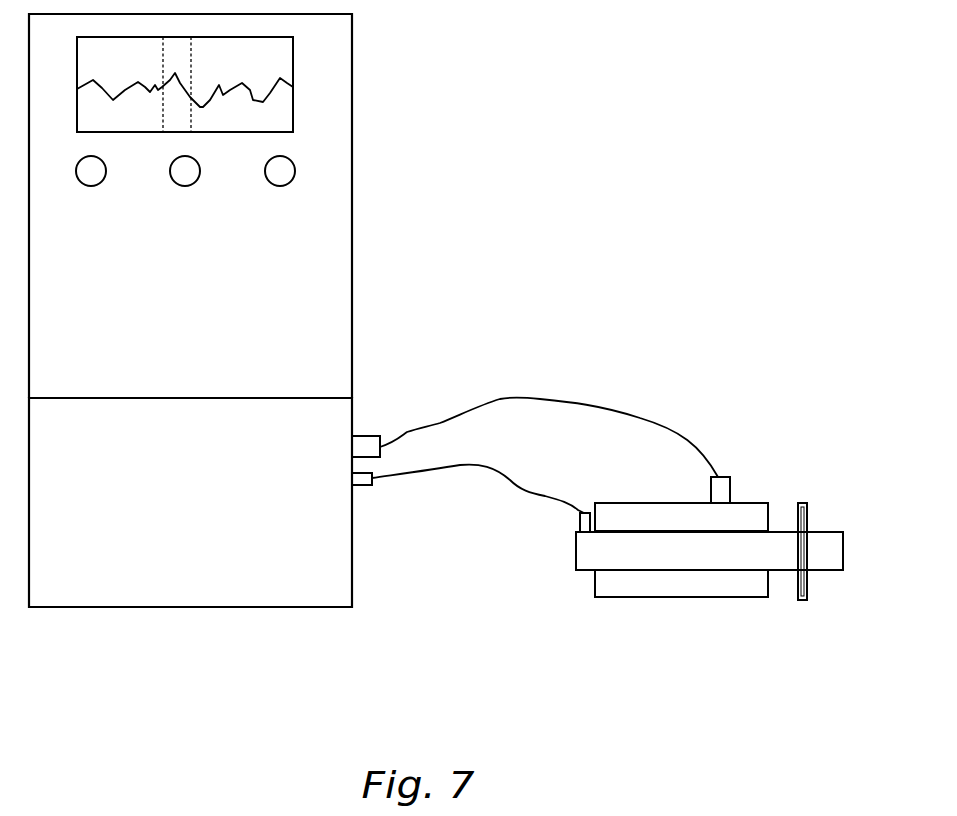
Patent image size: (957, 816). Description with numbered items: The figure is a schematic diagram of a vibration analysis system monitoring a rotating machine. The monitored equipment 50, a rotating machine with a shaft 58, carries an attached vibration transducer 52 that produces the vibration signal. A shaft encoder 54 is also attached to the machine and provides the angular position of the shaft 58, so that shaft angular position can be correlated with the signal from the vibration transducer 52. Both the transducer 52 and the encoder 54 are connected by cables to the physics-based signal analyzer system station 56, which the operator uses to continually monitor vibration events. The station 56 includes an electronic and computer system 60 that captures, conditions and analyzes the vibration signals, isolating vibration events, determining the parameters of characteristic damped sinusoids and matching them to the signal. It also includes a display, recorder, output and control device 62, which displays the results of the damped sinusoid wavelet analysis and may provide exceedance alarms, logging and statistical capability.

The monitored equipment 50 is at (722, 587).
The vibration transducer 52 is at (723, 483).
The shaft encoder 54 is at (578, 520).
The physics-based signal analyzer system station 56 is at (358, 405).
The shaft 58 is at (573, 568).
The electronic and computer system 60 is at (312, 592).
The display, recorder, output and control device 62 is at (352, 235).